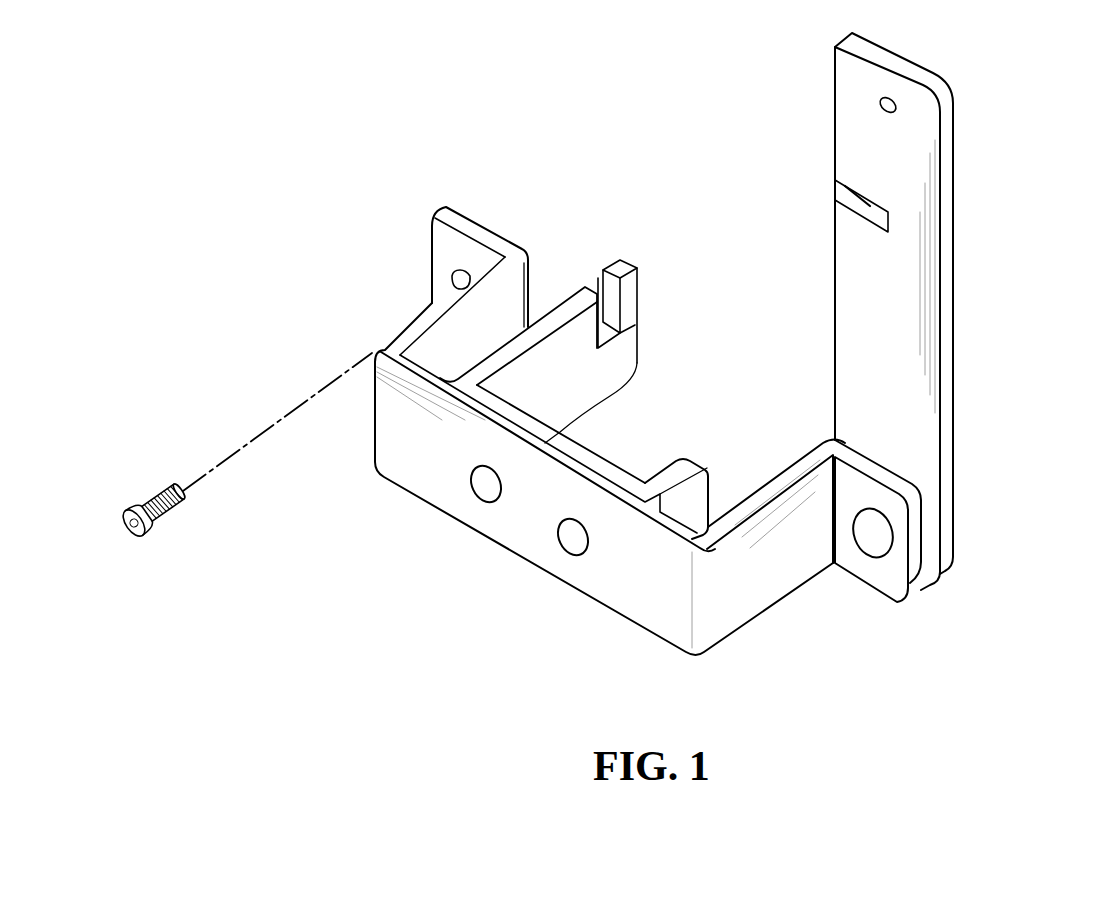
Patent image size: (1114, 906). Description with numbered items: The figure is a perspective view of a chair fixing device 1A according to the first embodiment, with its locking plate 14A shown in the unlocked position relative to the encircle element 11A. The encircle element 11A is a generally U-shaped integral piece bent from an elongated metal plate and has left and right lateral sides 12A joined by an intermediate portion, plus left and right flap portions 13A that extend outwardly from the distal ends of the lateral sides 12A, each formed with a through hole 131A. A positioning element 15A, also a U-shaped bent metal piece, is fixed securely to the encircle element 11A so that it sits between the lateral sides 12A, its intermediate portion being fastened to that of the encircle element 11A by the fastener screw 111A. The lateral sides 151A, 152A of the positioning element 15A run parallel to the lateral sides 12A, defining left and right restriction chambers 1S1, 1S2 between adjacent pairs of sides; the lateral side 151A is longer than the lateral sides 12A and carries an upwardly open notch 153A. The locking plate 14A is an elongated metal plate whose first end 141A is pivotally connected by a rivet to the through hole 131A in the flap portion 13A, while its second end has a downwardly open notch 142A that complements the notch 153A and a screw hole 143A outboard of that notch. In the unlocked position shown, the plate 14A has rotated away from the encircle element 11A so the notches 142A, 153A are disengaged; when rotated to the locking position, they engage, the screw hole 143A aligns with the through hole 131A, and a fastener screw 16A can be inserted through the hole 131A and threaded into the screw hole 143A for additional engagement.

The chair fixing device 1A is at (615, 380).
The encircle element 11A is at (617, 595).
The fastener screw 111A is at (566, 540).
The lateral sides of the encircle element 12A is at (727, 630).
The flap portions 13A is at (443, 235).
The through hole 131A is at (462, 272).
The locking plate 14A is at (908, 311).
The first end of the locking plate 141A is at (878, 530).
The downwardly open notch 142A is at (845, 191).
The screw hole 143A is at (880, 101).
The positioning element 15A is at (572, 333).
The lateral side of the positioning element 151A is at (577, 325).
The lateral side of the positioning element 152A is at (710, 480).
The upwardly open notch 153A is at (598, 283).
The fastener screw 16A is at (178, 511).
The restriction chamber 1S1 is at (450, 343).
The restriction chamber 1S2 is at (697, 513).